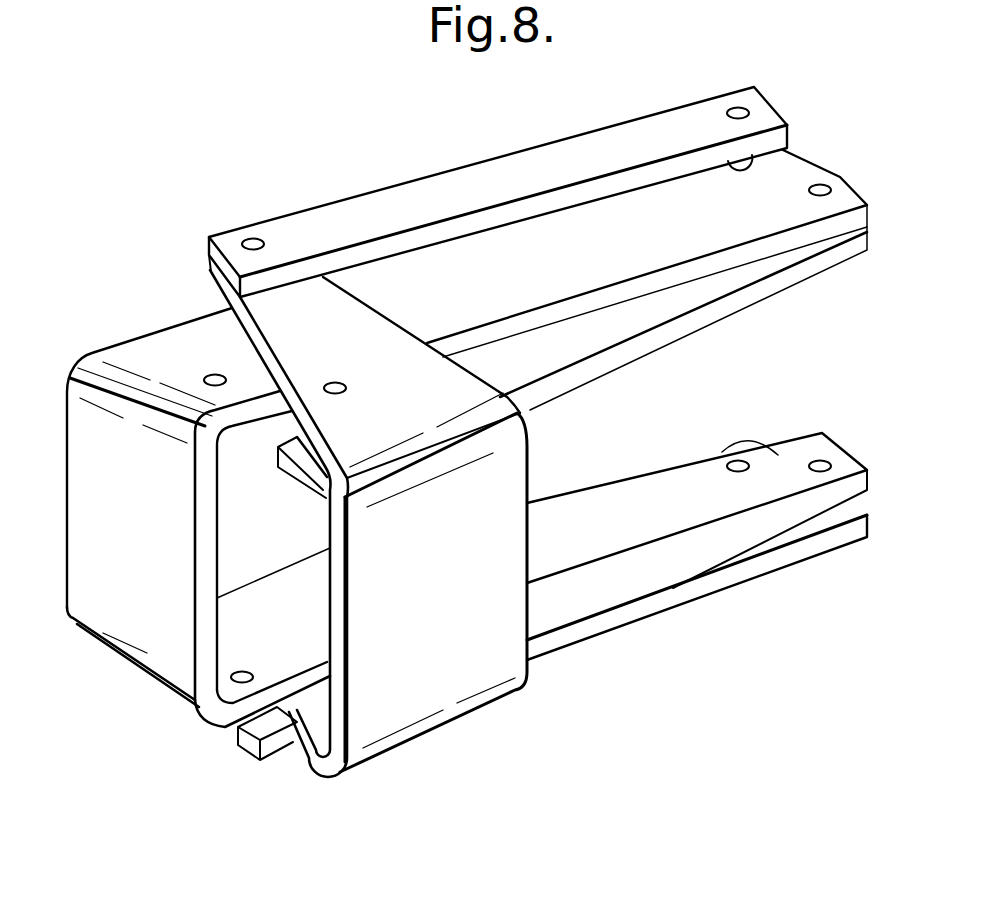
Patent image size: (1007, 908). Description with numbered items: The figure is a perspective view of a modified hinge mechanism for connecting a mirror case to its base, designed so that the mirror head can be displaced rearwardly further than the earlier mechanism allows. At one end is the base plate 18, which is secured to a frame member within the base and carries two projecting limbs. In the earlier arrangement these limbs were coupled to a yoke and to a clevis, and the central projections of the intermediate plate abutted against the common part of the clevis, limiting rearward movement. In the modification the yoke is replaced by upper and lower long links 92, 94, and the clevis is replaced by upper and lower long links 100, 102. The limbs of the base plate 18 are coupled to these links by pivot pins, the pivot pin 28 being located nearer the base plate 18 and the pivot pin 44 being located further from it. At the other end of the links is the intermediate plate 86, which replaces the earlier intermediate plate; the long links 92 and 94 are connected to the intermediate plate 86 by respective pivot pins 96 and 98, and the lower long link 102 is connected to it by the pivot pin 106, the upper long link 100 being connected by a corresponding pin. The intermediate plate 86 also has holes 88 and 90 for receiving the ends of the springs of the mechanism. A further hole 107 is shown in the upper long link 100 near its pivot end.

The base plate 18 is at (520, 484).
The pivot pin 28 is at (337, 387).
The pivot pin 44 is at (252, 240).
The intermediate plate 86 is at (148, 648).
The hole 88 is at (215, 379).
The hole 90 is at (246, 673).
The upper long link 92 is at (653, 313).
The lower long link 94 is at (642, 540).
The pivot pin 96 is at (826, 189).
The pivot pin 98 is at (826, 462).
The upper long link 100 is at (458, 180).
The lower long link 102 is at (258, 746).
The pivot pin 106 is at (740, 464).
The hole in bar 107 is at (748, 113).